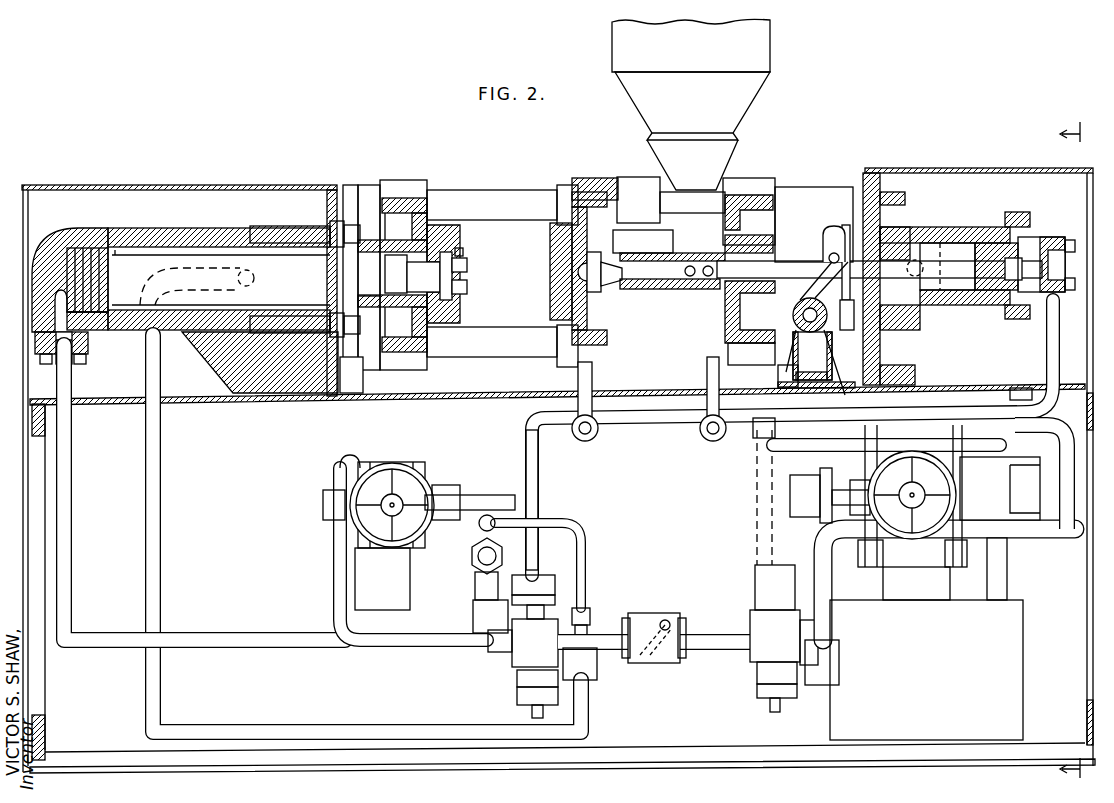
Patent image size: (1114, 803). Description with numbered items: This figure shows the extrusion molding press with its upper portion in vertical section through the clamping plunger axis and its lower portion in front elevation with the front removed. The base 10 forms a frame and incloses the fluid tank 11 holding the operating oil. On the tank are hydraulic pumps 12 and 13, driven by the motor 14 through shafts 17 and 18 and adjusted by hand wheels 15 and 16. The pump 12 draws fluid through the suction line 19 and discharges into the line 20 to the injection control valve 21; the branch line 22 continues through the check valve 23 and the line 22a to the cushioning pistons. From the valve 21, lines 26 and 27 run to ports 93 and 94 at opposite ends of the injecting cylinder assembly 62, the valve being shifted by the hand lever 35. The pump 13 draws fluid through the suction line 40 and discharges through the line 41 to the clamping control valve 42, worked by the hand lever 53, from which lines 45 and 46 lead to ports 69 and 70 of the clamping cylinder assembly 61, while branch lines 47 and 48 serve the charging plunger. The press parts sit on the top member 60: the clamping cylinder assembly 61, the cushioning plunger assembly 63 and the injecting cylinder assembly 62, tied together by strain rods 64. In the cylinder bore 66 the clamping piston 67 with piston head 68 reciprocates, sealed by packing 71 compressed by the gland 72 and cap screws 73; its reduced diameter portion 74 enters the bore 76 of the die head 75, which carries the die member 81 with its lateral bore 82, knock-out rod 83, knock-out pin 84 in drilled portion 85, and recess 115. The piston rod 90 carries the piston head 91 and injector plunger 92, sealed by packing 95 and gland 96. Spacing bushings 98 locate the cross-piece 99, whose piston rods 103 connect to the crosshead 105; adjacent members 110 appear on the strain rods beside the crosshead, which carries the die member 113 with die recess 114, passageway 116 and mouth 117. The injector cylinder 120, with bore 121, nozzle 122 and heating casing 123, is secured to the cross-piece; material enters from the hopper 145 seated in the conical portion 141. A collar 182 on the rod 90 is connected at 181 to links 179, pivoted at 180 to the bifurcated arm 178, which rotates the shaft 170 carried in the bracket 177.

The base 10 is at (28, 438).
The fluid tank 11 is at (1020, 625).
The hydraulic pump 12 is at (966, 560).
The hydraulic pump 13 is at (372, 470).
The motor 14 is at (600, 470).
The hand wheel 15 is at (955, 503).
The hand wheel 16 is at (420, 485).
The shaft 17 is at (837, 490).
The shaft 18 is at (480, 500).
The suction line 19 is at (1000, 578).
The line 20 is at (985, 452).
The injection control valve 21 is at (795, 670).
The branch line 22 is at (612, 652).
The line 22a is at (526, 462).
The check valve 23 is at (660, 664).
The line 26 is at (757, 522).
The line 27 is at (828, 589).
The injection control valve hand lever 35 is at (720, 382).
The suction line 40 is at (333, 590).
The line 41 is at (338, 480).
The clamping control valve 42 is at (512, 682).
The line 45 is at (128, 648).
The line 46 is at (162, 505).
The branch line 47 is at (475, 590).
The branch line 48 is at (548, 520).
The clamping control valve hand lever 53 is at (578, 385).
The top member 60 is at (212, 403).
The clamping cylinder assembly 61 is at (208, 228).
The injecting cylinder assembly 62 is at (950, 240).
The cushioning plunger assembly 63 is at (633, 177).
The strain rods 64 is at (481, 195).
The cylinder bore 66 is at (135, 253).
The clamping piston 67 is at (165, 258).
The piston head 68 is at (78, 250).
The port 69 is at (82, 345).
The port 70 is at (254, 273).
The packing 71 is at (272, 228).
The gland 72 is at (349, 188).
The cap screws 73 is at (332, 228).
The reduced diameter portion 74 is at (358, 264).
The die head 75 is at (358, 296).
The bore 76 is at (415, 235).
The die member 81 is at (455, 240).
The lateral bore 82 is at (428, 282).
The knock-out rod 83 is at (410, 268).
The knock-out pin 84 is at (458, 265).
The drilled portion 85 is at (463, 286).
The piston rod 90 is at (990, 243).
The piston head 91 is at (1005, 310).
The injector plunger 92 is at (795, 262).
The port 93 is at (1056, 250).
The port 94 is at (925, 228).
The packing 95 is at (889, 210).
The gland 96 is at (866, 200).
The spacing bushings 98 is at (818, 190).
The cross-piece 99 is at (766, 190).
The piston rods 103 is at (692, 214).
The crosshead 105 is at (590, 190).
The bracket 110 is at (557, 199).
The die member 113 is at (552, 229).
The die recess 114 is at (552, 268).
The recess 115 is at (473, 245).
The passageway 116 is at (578, 272).
The mouth 117 is at (596, 286).
The injector cylinder 120 is at (680, 290).
The bore 121 is at (650, 290).
The nozzle or nose portion 122 is at (612, 266).
The casing 123 is at (660, 253).
The conical upwardly extending portion 141 is at (735, 153).
The hopper 145 is at (752, 90).
The shaft 170 is at (830, 340).
The bracket 177 is at (832, 360).
The bifurcated arm 178 is at (805, 298).
The links 179 is at (828, 228).
The pivotal connection 180 is at (830, 255).
The pivotal connection 181 is at (846, 225).
The collar 182 is at (857, 315).